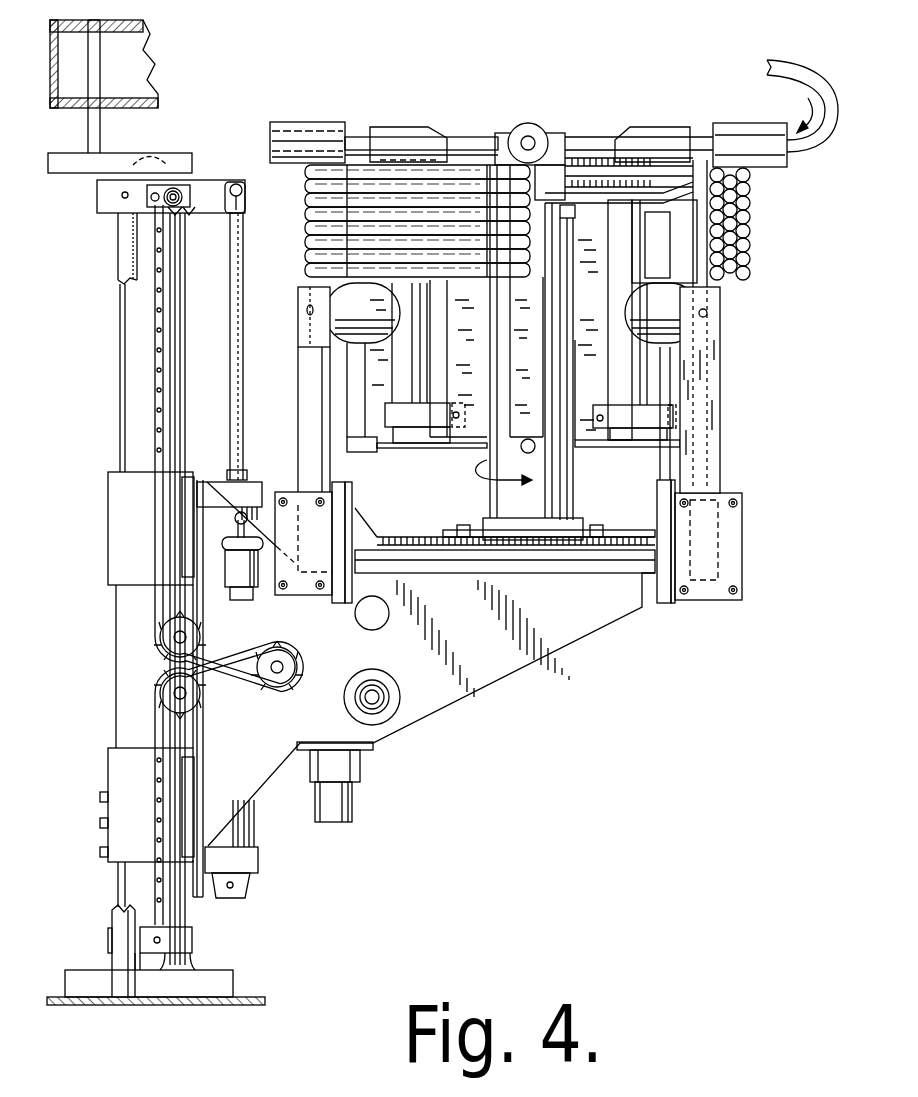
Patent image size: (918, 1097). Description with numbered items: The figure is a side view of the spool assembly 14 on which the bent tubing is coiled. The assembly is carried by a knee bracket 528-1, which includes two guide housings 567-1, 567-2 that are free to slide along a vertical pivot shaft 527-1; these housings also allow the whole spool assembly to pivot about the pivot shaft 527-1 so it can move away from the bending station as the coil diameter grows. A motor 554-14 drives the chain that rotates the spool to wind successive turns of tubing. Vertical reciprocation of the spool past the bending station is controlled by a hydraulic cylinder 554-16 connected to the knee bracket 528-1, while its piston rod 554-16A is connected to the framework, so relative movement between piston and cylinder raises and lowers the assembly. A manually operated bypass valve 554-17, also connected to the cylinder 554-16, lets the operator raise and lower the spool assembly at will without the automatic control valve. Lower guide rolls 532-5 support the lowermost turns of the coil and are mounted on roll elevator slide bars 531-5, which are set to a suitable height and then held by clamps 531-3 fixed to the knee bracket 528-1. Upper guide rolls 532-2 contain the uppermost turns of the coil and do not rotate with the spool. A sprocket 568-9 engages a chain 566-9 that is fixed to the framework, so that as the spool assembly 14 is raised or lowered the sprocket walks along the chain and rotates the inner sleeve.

The spool assembly 14 is at (504, 98).
The upper guide rolls 532-2 is at (305, 135).
The lower guide rolls 532-5 is at (300, 346).
The clamps 531-3 is at (308, 594).
The roll elevator slide bars 531-5 is at (718, 405).
The knee bracket 528-1 is at (570, 630).
The motor 554-14 is at (342, 799).
The hydraulic cylinder 554-16 is at (251, 483).
The piston rod 554-16A is at (233, 342).
The bypass valve 554-17 is at (220, 543).
The chain 566-9 is at (160, 373).
The guide housing 567-1 is at (118, 766).
The guide housing 567-2 is at (117, 541).
The pivot shaft 527-1 is at (125, 632).
The sprocket 568-9 is at (278, 682).